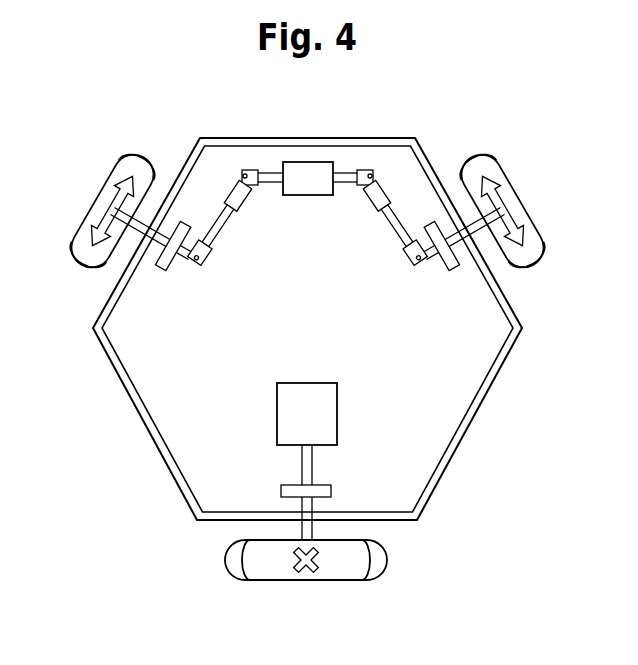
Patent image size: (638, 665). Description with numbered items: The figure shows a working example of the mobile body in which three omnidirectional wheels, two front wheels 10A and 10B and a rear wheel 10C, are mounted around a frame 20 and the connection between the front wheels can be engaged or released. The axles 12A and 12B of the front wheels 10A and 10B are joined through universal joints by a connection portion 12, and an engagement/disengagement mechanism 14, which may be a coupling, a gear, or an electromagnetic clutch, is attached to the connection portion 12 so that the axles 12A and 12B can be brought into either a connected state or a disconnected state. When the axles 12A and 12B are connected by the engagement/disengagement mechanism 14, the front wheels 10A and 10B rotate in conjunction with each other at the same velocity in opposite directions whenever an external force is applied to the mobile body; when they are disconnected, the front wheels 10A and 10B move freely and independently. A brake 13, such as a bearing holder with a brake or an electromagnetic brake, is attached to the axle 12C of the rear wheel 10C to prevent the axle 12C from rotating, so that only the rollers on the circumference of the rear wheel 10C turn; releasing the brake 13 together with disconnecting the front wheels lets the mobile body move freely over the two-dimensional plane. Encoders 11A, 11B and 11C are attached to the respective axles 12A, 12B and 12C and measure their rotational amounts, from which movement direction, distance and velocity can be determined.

The frame 20 is at (372, 138).
The front wheel 10A is at (509, 176).
The front wheel 10B is at (109, 176).
The rear wheel 10C is at (343, 582).
The encoder 11A is at (457, 268).
The encoder 11B is at (158, 268).
The encoder 11C is at (331, 490).
The connection portion 12 is at (271, 184).
The axle 12A is at (418, 266).
The axle 12B is at (198, 266).
The axle 12C is at (312, 462).
The brake 13 is at (337, 412).
The engagement/disengagement mechanism 14 is at (320, 192).